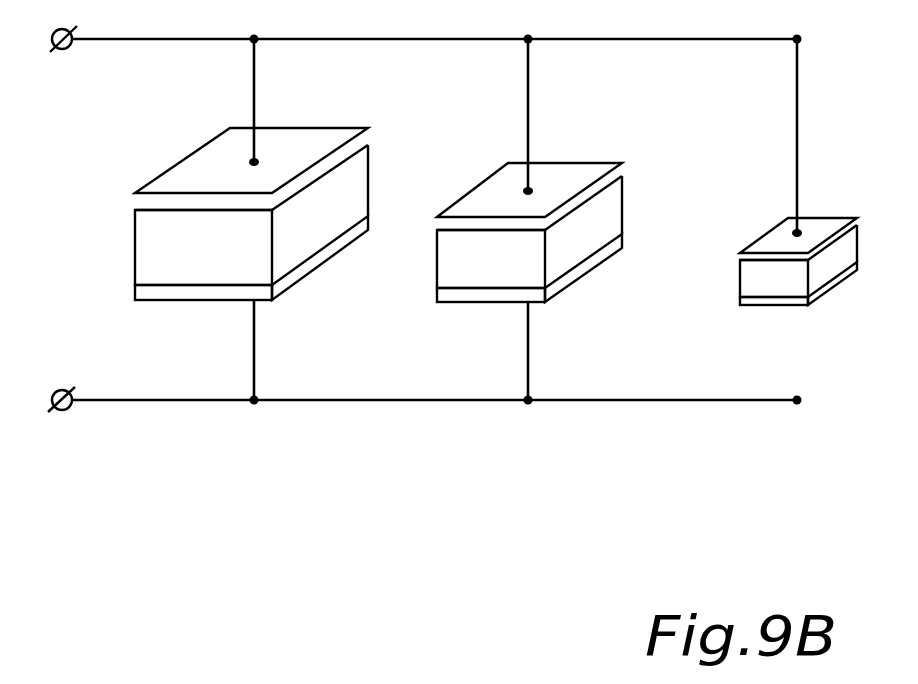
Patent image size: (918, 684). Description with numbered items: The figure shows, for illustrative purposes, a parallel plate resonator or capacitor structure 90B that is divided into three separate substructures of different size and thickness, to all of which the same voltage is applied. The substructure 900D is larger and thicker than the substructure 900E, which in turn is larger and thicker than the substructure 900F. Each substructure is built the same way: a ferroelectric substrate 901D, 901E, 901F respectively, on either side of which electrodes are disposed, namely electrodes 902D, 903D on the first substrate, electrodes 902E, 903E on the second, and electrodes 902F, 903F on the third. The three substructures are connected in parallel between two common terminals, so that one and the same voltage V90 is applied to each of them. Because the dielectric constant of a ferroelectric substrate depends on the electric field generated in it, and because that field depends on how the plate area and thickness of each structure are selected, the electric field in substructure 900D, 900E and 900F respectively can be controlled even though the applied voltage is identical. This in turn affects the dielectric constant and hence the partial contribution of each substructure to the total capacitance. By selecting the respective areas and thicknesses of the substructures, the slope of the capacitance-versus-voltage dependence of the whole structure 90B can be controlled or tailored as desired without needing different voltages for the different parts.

The parallel plate resonator or capacitor structure 90B is at (211, 537).
The voltage V90 is at (53, 219).
The substructure 900D is at (335, 113).
The ferroelectric substrate 901D is at (143, 249).
The electrode 902D is at (275, 288).
The electrode 903D is at (217, 160).
The substructure 900E is at (587, 149).
The ferroelectric substrate 901E is at (457, 272).
The electrode 902E is at (553, 288).
The electrode 903E is at (505, 188).
The substructure 900F is at (839, 197).
The ferroelectric substrate 901F is at (757, 280).
The electrode 902F is at (830, 283).
The electrode 903F is at (775, 235).